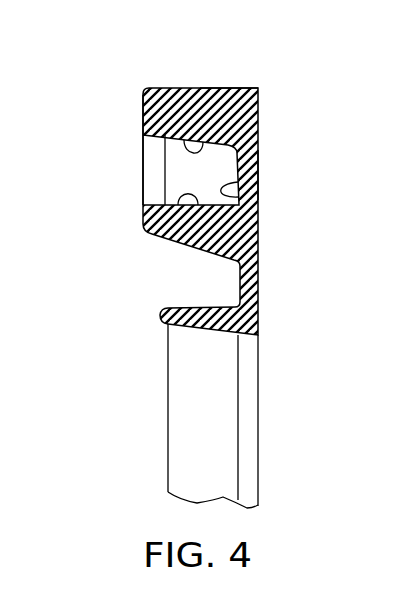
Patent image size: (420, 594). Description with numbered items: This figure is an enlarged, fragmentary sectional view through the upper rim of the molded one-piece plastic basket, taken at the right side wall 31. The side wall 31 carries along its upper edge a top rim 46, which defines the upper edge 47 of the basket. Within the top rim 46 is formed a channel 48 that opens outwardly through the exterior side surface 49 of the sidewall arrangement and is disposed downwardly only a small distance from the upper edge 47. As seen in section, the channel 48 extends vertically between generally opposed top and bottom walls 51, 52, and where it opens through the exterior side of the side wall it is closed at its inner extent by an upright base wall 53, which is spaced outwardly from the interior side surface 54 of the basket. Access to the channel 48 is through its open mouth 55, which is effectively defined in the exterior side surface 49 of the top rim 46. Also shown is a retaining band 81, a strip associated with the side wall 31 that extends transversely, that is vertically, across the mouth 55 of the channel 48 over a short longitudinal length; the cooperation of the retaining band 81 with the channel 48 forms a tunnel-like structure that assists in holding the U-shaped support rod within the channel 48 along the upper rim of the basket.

The right side wall 31 is at (254, 400).
The top rim 46 is at (266, 120).
The upper edge 47 is at (198, 88).
The channel 48 is at (195, 175).
The exterior side surface 49 is at (143, 115).
The top wall 51 is at (186, 97).
The bottom wall 52 is at (180, 204).
The base wall 53 is at (240, 196).
The interior side surface 54 is at (258, 172).
The open mouth 55 is at (182, 157).
The retaining band 81 is at (150, 194).